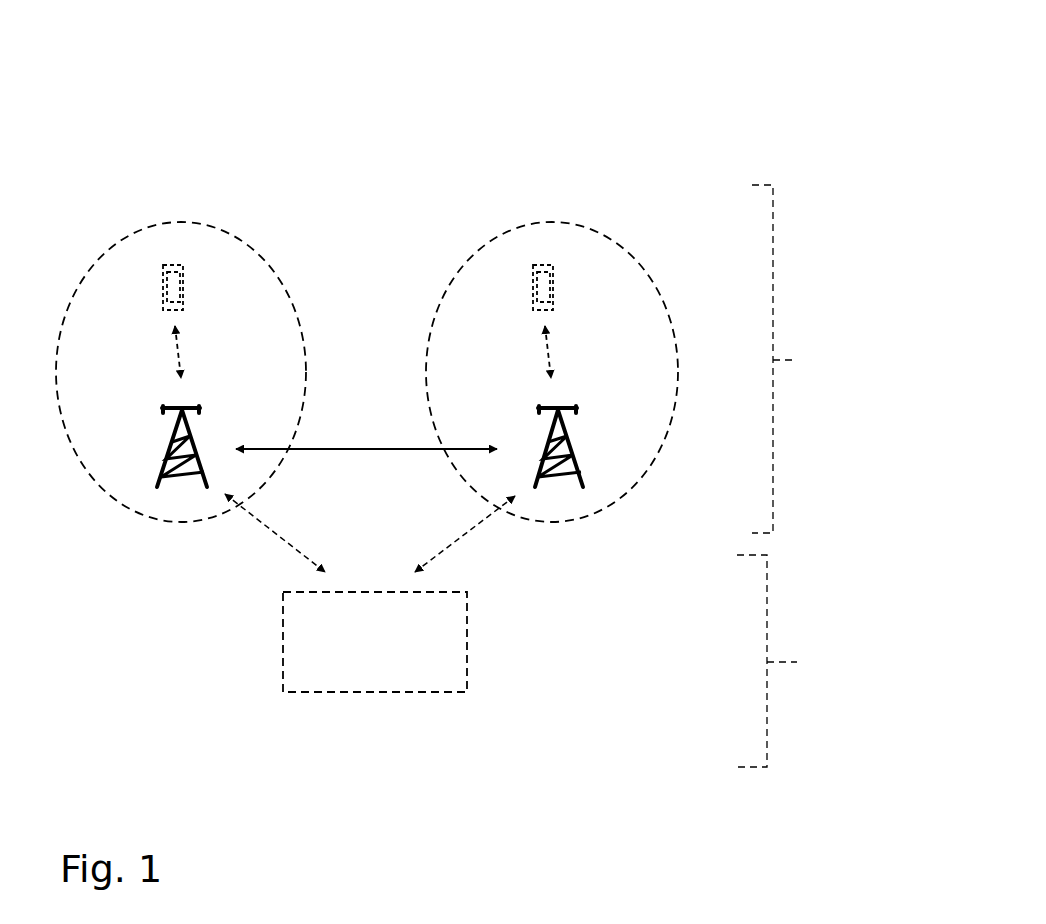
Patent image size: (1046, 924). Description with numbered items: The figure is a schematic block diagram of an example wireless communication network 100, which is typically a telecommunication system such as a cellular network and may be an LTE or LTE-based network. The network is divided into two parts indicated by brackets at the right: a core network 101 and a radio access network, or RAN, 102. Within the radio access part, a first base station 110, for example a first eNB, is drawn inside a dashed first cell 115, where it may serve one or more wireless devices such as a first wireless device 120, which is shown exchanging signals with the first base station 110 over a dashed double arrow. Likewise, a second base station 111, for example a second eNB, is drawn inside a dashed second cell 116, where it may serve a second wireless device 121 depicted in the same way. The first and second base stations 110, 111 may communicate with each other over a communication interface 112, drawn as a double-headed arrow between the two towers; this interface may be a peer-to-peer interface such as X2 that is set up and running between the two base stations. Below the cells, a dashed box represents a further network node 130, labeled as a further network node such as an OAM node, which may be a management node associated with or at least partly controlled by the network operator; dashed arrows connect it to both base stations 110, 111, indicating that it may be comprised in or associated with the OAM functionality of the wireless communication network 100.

The wireless communication network 100 is at (740, 65).
The core network 101 is at (803, 359).
The radio access network 102 is at (814, 661).
The first base station 110 is at (172, 445).
The second base station 111 is at (585, 482).
The communication interface 112 is at (320, 450).
The first cell 115 is at (267, 263).
The second cell 116 is at (633, 263).
The first wireless device 120 is at (165, 292).
The second wireless device 121 is at (535, 292).
The further network node 130 is at (467, 657).